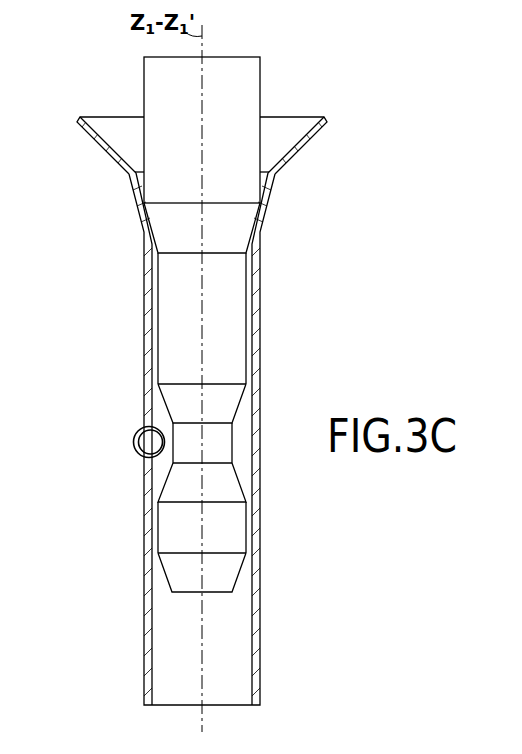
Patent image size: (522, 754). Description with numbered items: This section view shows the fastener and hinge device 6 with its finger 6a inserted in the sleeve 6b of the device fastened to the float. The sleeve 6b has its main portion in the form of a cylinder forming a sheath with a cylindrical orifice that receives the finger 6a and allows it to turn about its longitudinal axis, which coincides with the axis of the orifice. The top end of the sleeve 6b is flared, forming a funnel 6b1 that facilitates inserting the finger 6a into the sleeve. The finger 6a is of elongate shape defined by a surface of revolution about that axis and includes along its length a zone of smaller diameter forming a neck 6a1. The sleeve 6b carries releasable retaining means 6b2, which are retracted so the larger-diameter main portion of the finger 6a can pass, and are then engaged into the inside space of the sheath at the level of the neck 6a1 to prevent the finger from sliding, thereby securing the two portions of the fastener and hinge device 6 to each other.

The fastener and hinge device 6 is at (136, 82).
The finger 6a is at (232, 332).
The neck 6a1 is at (223, 445).
The sleeve 6b is at (146, 364).
The funnel 6b1 is at (103, 152).
The releasable retaining means 6b2 is at (140, 437).